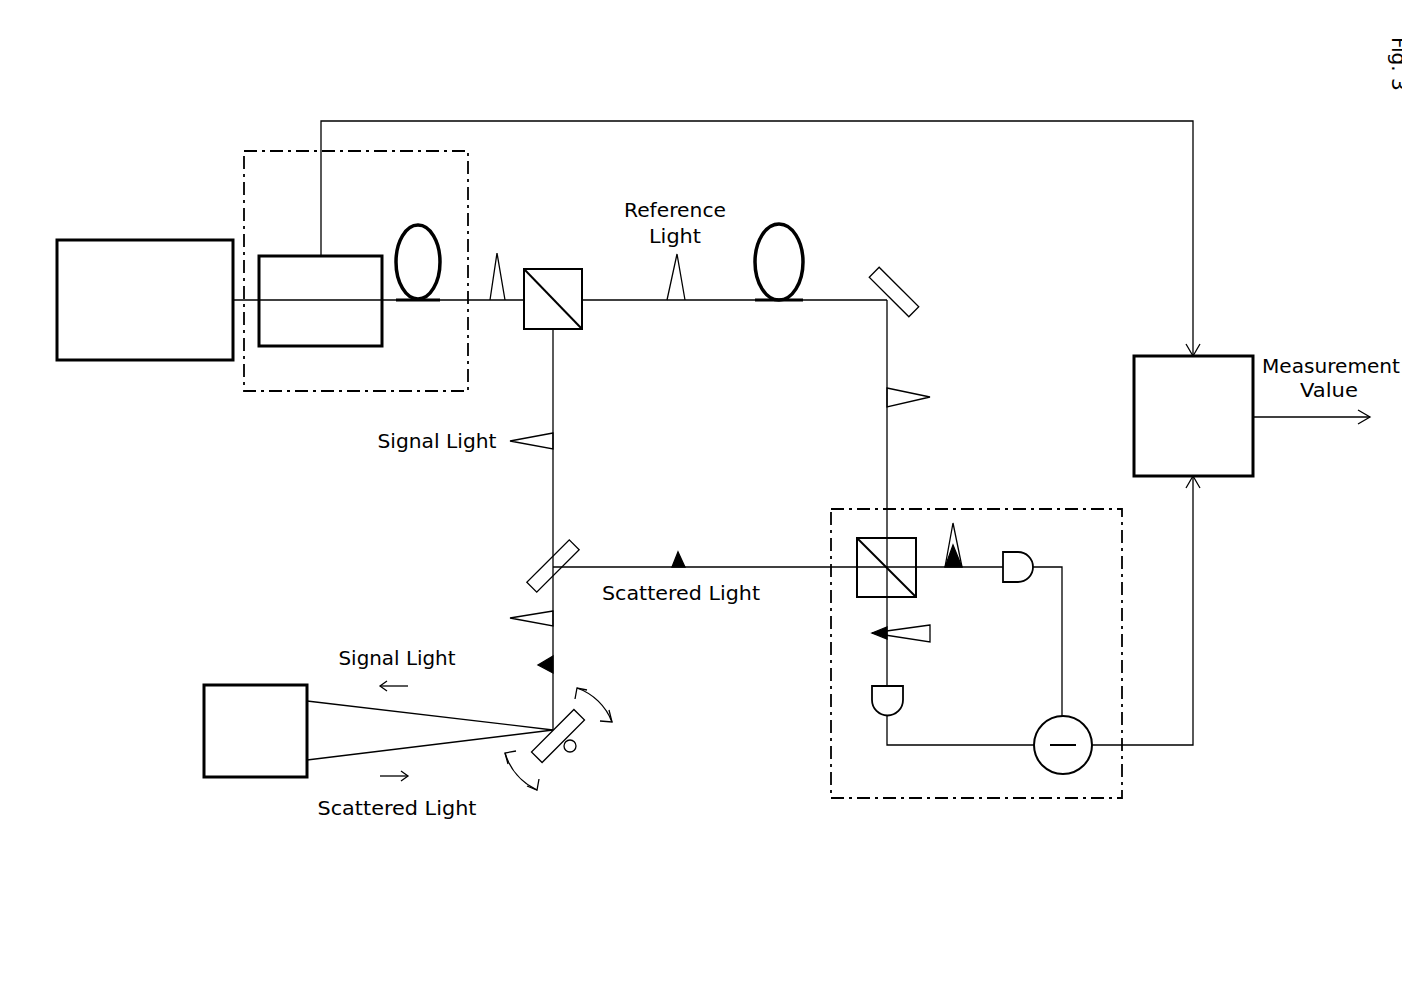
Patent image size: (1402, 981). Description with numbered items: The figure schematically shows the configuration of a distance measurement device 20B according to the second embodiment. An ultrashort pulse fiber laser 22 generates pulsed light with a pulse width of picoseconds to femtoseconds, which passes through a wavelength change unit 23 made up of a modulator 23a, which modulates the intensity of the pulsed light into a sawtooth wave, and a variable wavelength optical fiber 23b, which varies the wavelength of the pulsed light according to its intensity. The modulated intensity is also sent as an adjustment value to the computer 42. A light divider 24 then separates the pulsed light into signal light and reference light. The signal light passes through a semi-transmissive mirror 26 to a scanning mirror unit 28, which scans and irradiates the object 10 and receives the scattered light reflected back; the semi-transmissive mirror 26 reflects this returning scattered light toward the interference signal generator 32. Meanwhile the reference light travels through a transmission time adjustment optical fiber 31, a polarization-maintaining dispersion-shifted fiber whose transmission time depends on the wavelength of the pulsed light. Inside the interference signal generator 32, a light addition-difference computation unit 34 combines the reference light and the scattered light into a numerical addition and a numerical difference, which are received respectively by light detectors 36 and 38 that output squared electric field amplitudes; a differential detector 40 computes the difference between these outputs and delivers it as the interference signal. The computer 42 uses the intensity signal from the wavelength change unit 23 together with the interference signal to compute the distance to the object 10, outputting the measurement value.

The object 10 is at (255, 685).
The distance measurement device 20B is at (1127, 88).
The ultrashort pulse fiber laser 22 is at (118, 240).
The wavelength change unit 23 is at (257, 151).
The modulator 23a is at (292, 256).
The variable wavelength optical fiber 23b is at (417, 225).
The light divider 24 is at (550, 269).
The semi-transmissive mirror 26 is at (578, 538).
The scanning mirror unit 28 is at (582, 733).
The transmission time adjustment optical fiber 31 is at (795, 230).
The interference signal generator 32 is at (975, 509).
The light addition-difference computation unit 34 is at (857, 558).
The light detector 36 is at (1025, 552).
The light detector 38 is at (903, 700).
The differential detector 40 is at (1087, 762).
The computer 42 is at (1218, 356).